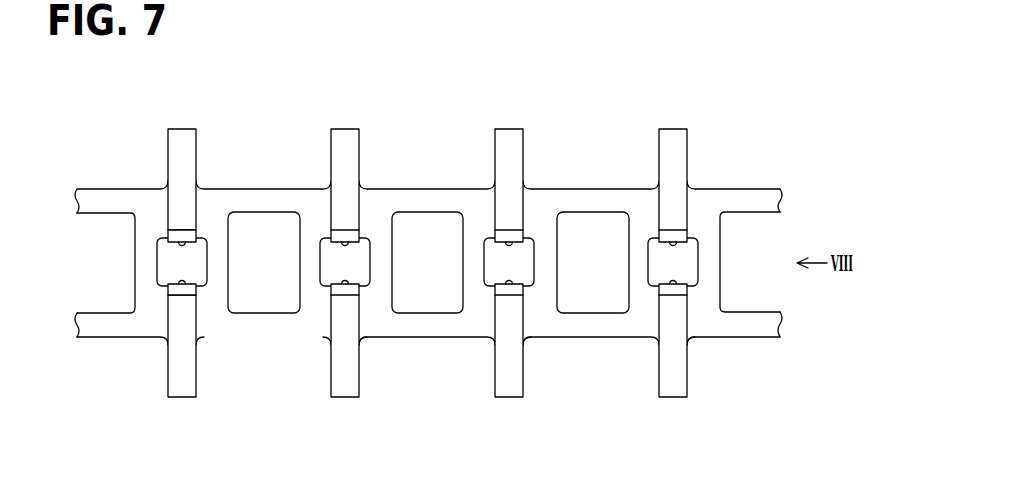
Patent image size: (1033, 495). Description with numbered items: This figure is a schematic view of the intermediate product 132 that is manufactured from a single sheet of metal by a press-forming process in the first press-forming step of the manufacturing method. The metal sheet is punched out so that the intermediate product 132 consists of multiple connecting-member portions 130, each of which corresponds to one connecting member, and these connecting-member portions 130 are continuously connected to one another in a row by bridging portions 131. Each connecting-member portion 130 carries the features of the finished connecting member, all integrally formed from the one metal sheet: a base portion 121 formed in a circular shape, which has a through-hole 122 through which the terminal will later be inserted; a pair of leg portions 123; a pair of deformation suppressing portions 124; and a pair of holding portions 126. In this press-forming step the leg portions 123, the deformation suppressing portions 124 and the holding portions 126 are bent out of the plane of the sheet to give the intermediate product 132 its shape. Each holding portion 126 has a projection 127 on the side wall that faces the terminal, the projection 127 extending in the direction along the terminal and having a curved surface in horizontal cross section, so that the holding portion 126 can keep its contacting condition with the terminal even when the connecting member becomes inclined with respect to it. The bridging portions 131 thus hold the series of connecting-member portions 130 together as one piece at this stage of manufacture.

The base portion 121 is at (155, 317).
The through-hole 122 is at (205, 263).
The leg portion 123 is at (115, 260).
The deformation suppressing portion 124 is at (178, 155).
The holding portion 126 is at (180, 237).
The projection 127 is at (178, 248).
The connecting-member portion 130 is at (223, 353).
The bridging portion 131 is at (95, 198).
The intermediate product 132 is at (686, 118).